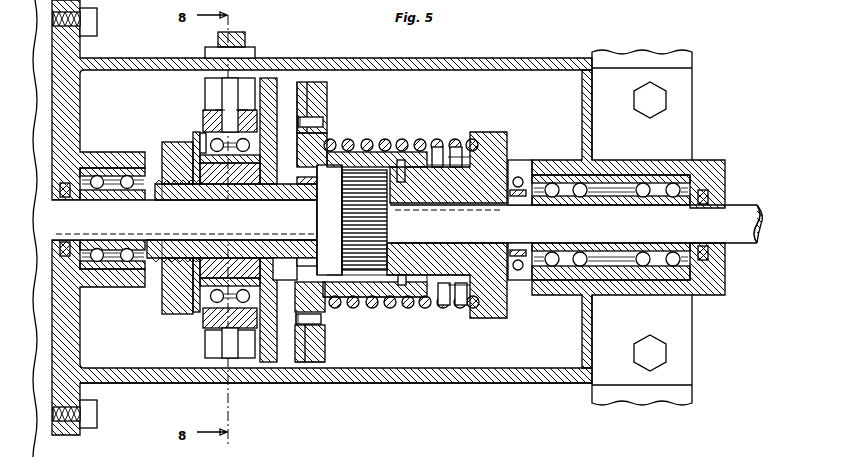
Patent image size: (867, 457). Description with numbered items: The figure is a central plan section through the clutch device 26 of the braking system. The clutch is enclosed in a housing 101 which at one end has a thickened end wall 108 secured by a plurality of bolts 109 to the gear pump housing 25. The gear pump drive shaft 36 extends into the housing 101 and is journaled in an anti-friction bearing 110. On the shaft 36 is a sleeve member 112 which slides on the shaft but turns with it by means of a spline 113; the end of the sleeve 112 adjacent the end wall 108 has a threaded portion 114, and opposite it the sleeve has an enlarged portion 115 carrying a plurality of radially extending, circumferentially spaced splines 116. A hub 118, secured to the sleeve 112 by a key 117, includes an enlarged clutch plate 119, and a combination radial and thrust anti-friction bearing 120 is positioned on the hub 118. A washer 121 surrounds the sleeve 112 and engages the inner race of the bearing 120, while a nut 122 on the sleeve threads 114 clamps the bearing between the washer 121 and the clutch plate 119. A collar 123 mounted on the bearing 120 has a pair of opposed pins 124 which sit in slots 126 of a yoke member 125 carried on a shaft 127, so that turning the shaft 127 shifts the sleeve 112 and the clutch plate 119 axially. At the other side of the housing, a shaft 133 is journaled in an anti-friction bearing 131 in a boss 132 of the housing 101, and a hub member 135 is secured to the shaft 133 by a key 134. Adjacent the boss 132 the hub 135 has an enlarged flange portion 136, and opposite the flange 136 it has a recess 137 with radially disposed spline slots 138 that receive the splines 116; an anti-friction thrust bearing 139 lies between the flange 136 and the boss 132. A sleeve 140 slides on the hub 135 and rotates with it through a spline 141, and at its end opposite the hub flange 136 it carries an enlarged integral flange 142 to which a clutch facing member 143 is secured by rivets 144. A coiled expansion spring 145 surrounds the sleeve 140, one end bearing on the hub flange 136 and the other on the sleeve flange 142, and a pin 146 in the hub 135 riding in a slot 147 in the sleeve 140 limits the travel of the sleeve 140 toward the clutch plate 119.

The gear pump housing 25 is at (55, 449).
The clutch device 26 is at (512, 63).
The gear pump drive shaft 36 is at (112, 272).
The housing 101 is at (443, 385).
The thickened end wall 108 is at (72, 346).
The bolts 109 is at (92, 34).
The anti-friction bearing 110 is at (97, 172).
The sleeve member 112 is at (185, 296).
The spline 113 is at (205, 240).
The threaded portion 114 is at (158, 262).
The enlarged portion 115 is at (315, 256).
The splines 116 is at (290, 270).
The key 117 is at (264, 178).
The hub 118 is at (199, 138).
The clutch plate 119 is at (275, 80).
The combination radial and thrust anti-friction bearing 120 is at (212, 142).
The washer 121 is at (196, 312).
The nut 122 is at (168, 298).
The collar 123 is at (203, 118).
The pins 124 is at (222, 87).
The yoke member 125 is at (208, 107).
The slots 126 is at (207, 98).
The shaft 127 is at (240, 37).
The anti-friction bearing 131 is at (641, 178).
The boss 132 is at (704, 166).
The shaft 133 is at (750, 205).
The key 134 is at (500, 204).
The hub member 135 is at (437, 296).
The flange portion 136 is at (490, 137).
The recess 137 is at (396, 300).
The spline slots 138 is at (363, 300).
The anti-friction thrust bearing 139 is at (519, 280).
The sleeve 140 is at (362, 152).
The spline 141 is at (456, 300).
The flange 142 is at (326, 351).
The clutch facing member 143 is at (300, 364).
The rivets 144 is at (324, 124).
The coiled expansion spring 145 is at (440, 147).
The pin 146 is at (402, 158).
The slot 147 is at (330, 170).